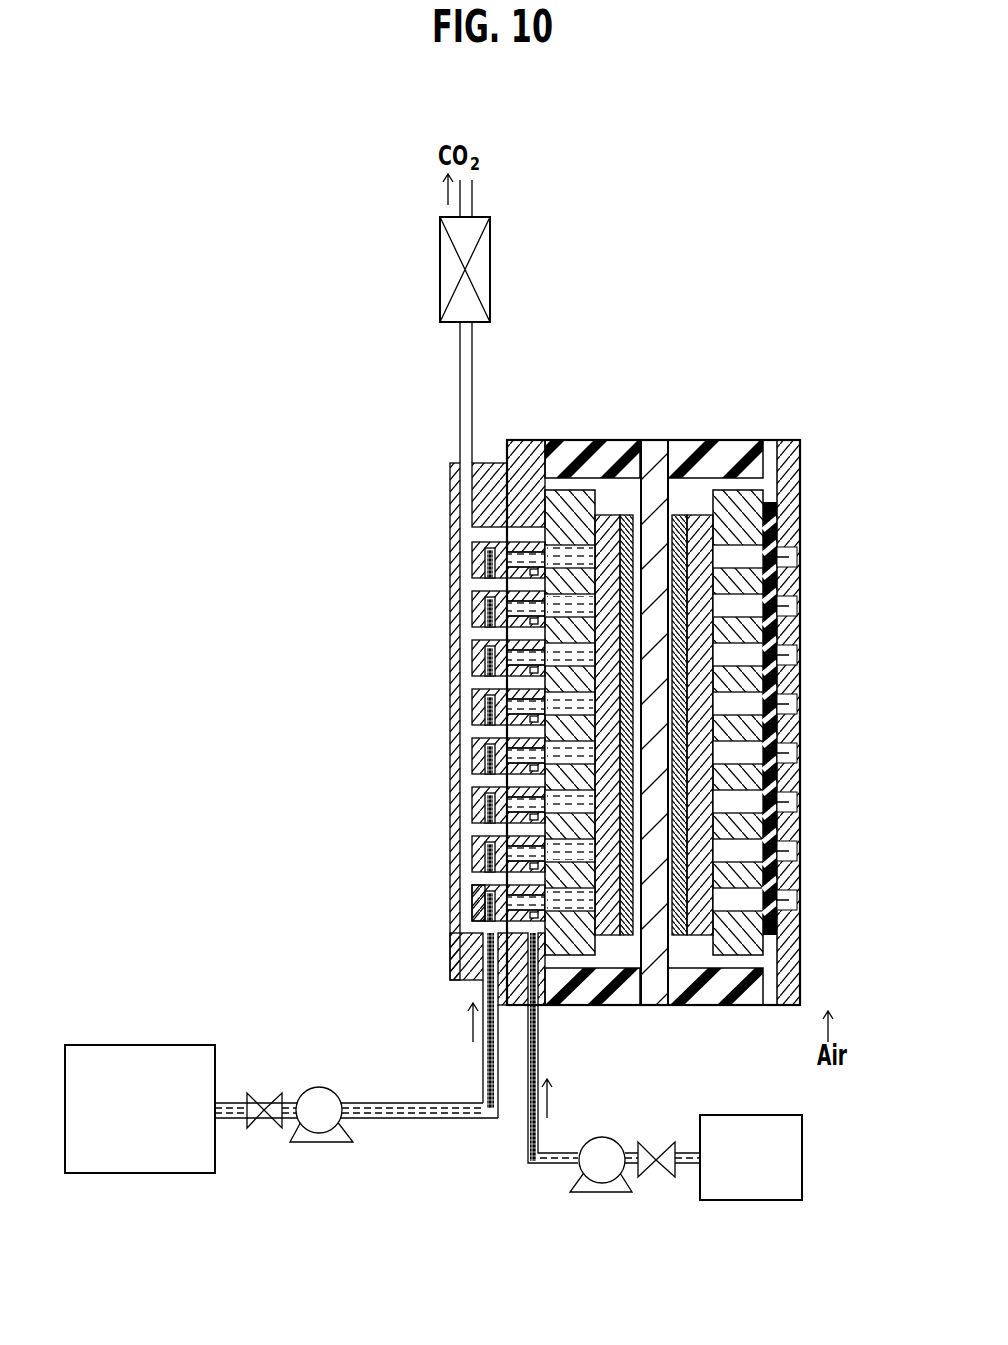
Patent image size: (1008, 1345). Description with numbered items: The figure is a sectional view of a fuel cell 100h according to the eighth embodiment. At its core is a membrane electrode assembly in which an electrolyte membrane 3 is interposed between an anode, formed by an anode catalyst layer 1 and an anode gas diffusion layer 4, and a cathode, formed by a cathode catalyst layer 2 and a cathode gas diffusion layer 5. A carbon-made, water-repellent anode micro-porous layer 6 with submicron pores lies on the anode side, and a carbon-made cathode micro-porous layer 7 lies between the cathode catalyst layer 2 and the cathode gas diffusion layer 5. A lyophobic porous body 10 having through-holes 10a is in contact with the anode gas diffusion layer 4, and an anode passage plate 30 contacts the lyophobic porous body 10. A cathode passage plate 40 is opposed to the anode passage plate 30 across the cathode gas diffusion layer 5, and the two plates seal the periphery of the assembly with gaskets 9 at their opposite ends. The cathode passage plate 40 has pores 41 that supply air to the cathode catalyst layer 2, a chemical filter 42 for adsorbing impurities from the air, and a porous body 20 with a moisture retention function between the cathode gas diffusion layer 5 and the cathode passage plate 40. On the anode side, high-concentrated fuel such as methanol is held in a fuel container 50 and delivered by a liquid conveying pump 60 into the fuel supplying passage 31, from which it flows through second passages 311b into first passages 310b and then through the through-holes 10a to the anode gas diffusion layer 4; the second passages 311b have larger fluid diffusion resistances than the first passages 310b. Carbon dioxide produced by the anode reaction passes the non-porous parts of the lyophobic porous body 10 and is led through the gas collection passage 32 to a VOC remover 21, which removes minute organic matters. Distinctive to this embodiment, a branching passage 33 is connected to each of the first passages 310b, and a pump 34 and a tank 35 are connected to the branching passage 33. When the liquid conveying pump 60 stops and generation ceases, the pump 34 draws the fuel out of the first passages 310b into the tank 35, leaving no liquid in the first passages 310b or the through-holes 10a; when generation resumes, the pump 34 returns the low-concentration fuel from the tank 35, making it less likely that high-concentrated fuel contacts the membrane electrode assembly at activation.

The fuel cell 100h is at (690, 188).
The VOC remover 21 is at (492, 263).
The anode passage plate 30 is at (528, 440).
The gas collection passage 32 is at (478, 740).
The first passages 310b is at (505, 858).
The second passages 311b is at (478, 910).
The fuel supplying passage 31 is at (465, 960).
The branching passage 33 is at (520, 1005).
The fuel container 50 is at (153, 1045).
The liquid conveying pump 60 is at (325, 1145).
The pump 34 is at (607, 1193).
The tank 35 is at (753, 1201).
The lyophobic porous body 10 is at (570, 492).
The through-holes 10a is at (588, 900).
The anode micro-porous layer 6 is at (632, 497).
The cathode micro-porous layer 7 is at (687, 497).
The gaskets 9 is at (713, 440).
The anode gas diffusion layer 4 is at (610, 930).
The anode catalyst layer 1 is at (633, 937).
The electrolyte membrane 3 is at (657, 1005).
The cathode catalyst layer 2 is at (687, 935).
The cathode gas diffusion layer 5 is at (707, 937).
The porous body 20 is at (747, 493).
The chemical filter 42 is at (778, 530).
The cathode passage plate 40 is at (788, 440).
The pores 41 is at (778, 903).